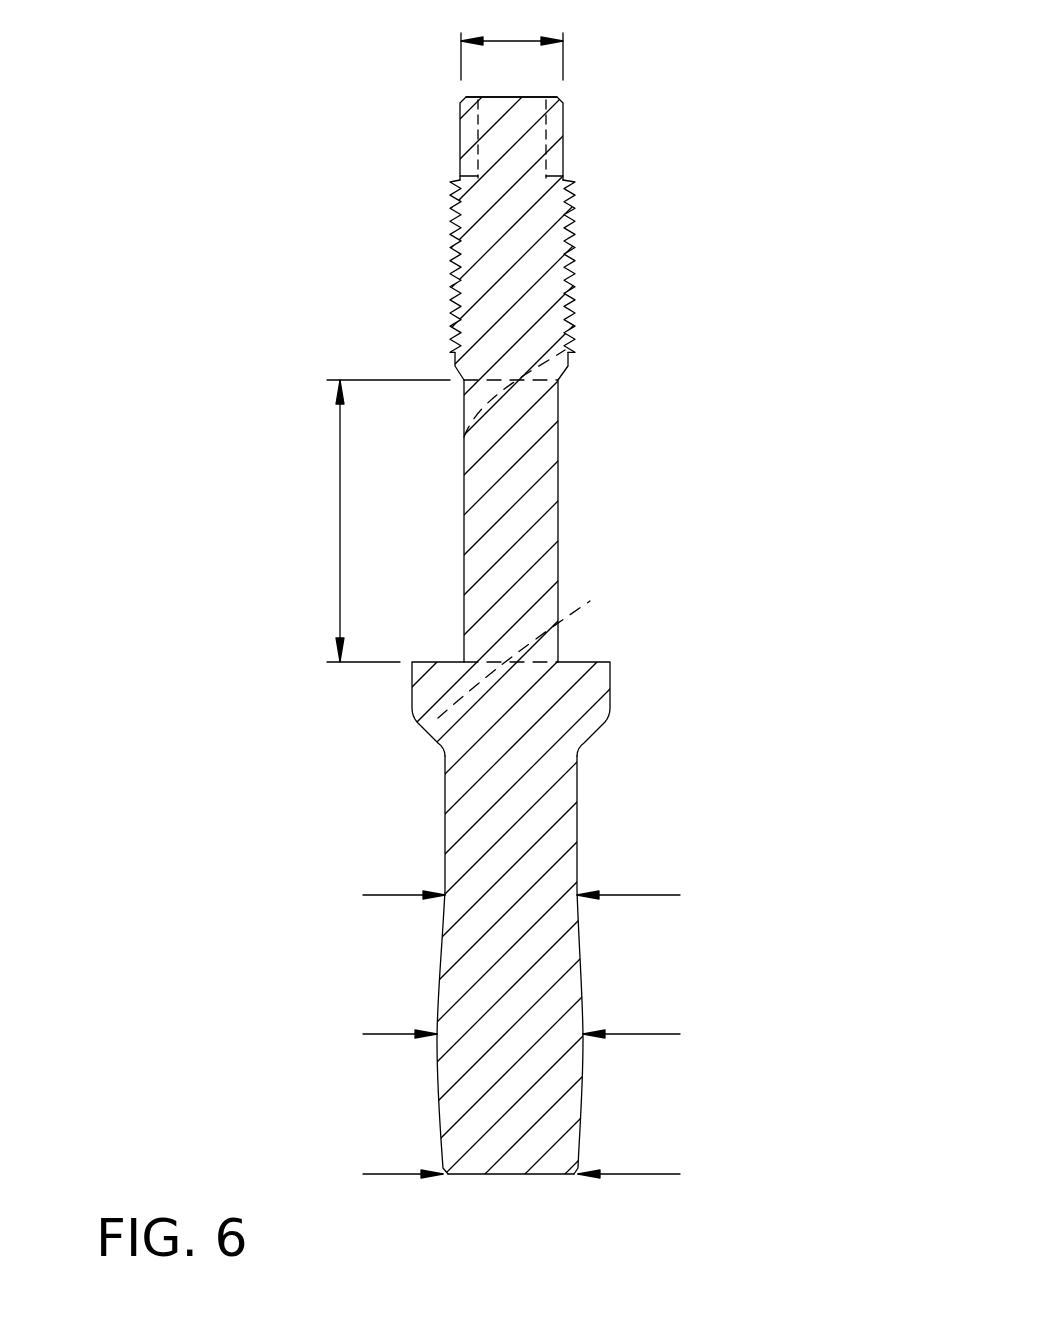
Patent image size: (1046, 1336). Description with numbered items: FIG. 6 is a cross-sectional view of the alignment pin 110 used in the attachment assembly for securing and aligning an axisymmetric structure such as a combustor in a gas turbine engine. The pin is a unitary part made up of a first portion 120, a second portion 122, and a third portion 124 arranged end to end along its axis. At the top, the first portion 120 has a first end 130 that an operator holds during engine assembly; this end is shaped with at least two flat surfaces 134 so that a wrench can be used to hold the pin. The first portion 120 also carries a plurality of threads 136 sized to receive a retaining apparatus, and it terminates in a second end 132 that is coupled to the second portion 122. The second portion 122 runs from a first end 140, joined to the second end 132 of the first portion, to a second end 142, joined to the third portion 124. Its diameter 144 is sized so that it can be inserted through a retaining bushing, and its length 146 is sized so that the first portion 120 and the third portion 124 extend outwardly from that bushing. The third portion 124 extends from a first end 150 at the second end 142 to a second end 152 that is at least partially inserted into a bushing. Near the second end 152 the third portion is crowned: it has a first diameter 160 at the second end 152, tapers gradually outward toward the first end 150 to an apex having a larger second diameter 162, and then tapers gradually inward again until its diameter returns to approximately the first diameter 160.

The alignment pin 110 is at (745, 78).
The first portion 120 is at (563, 128).
The second portion 122 is at (525, 515).
The third portion 124 is at (540, 820).
The first end 130 is at (535, 97).
The second end 132 is at (462, 430).
The flat surfaces 134 is at (462, 162).
The threads 136 is at (415, 266).
The first end 140 is at (582, 350).
The second end 142 is at (420, 722).
The diameter 144 is at (516, 41).
The length 146 is at (340, 522).
The first end 150 is at (593, 598).
The second end 152 is at (505, 1177).
The first diameter 160 is at (390, 894).
The second diameter 162 is at (390, 1033).